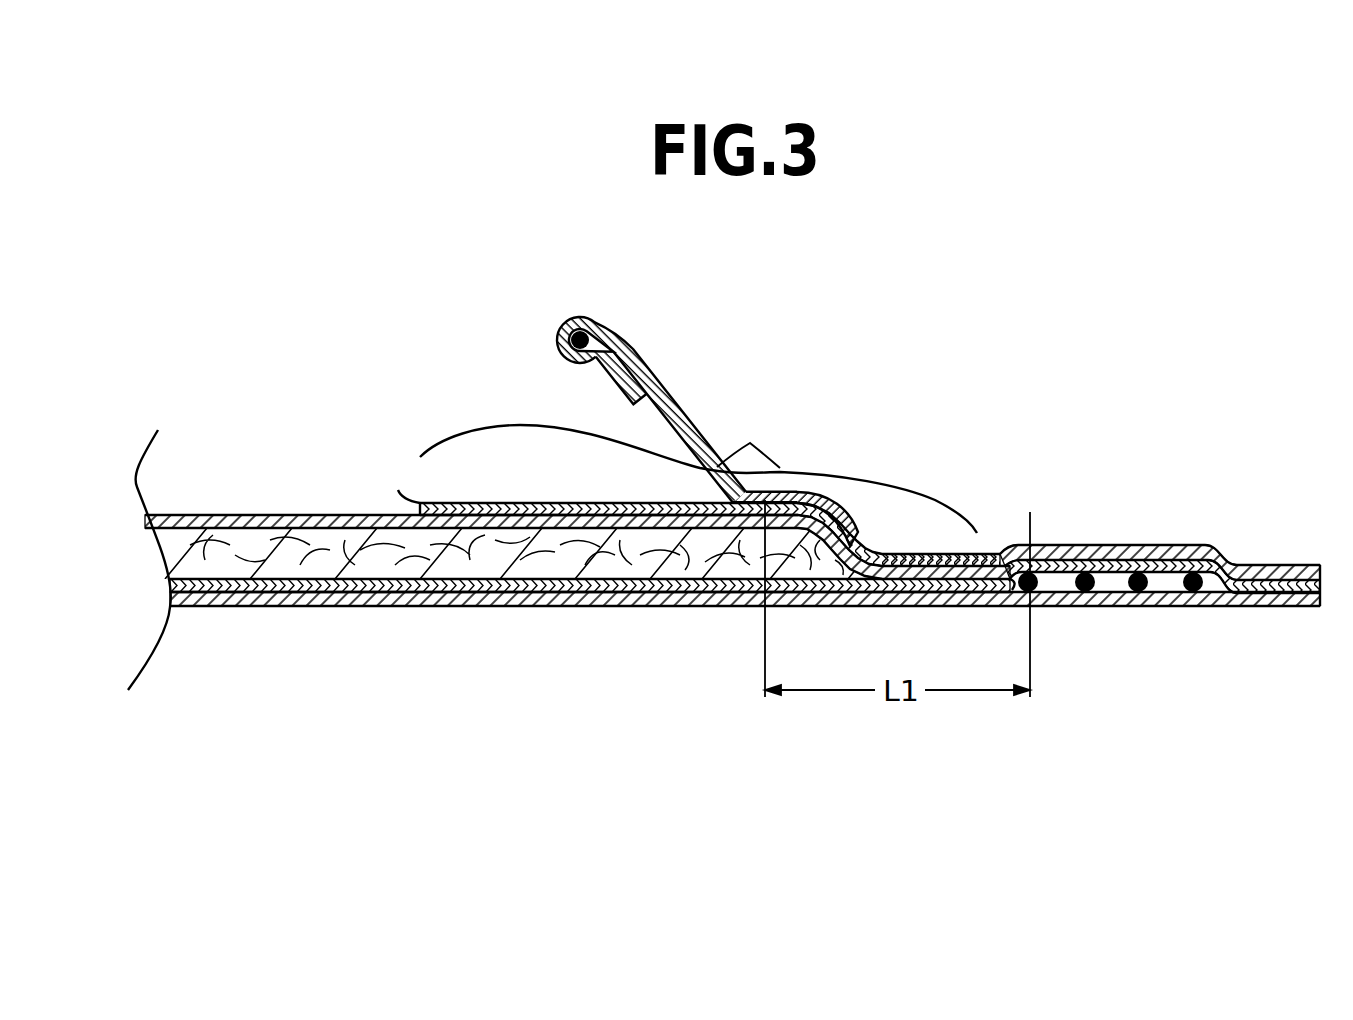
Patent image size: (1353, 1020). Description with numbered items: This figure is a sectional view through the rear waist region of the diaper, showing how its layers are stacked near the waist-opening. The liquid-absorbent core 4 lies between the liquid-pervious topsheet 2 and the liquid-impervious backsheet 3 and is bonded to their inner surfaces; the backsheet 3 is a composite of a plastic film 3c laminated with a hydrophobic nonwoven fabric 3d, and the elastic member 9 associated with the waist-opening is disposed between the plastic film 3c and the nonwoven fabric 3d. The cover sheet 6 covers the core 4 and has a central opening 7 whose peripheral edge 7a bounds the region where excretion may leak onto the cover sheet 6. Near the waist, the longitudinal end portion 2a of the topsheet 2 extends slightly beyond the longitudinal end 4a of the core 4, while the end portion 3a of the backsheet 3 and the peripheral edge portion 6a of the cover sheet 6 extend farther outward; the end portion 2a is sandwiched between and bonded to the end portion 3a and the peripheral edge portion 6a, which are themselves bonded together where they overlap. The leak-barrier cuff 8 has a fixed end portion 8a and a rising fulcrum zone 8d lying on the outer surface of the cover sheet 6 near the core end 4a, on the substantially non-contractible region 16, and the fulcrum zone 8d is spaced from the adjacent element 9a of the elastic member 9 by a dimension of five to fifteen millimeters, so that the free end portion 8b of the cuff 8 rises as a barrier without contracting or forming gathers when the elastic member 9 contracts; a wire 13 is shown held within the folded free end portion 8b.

The topsheet 2 is at (577, 523).
The longitudinal end portion of the topsheet 2a is at (933, 570).
The backsheet 3 is at (745, 625).
The longitudinal end portion of the backsheet 3a is at (1273, 585).
The plastic film 3c is at (585, 598).
The hydrophobic nonwoven fabric 3d is at (658, 605).
The liquid-absorbent core 4 is at (470, 565).
The longitudinal end of the core 4a is at (813, 553).
The cover sheet 6 is at (470, 503).
The peripheral edge portion of the cover sheet 6a is at (1105, 546).
The central opening 7 is at (320, 500).
The peripheral edge of the opening 7a is at (398, 490).
The leak-barrier cuff 8 is at (668, 403).
The fixed end portion of the leak-barrier cuff 8a is at (840, 510).
The free end portion of the leak-barrier cuff 8b is at (612, 362).
The rising fulcrum zone 8d is at (777, 467).
The elastic member associated with the waist-opening 9 is at (1180, 590).
The element of the elastic member 9a is at (1028, 575).
The wire 13 is at (577, 331).
The non-contractible region 16 is at (748, 440).